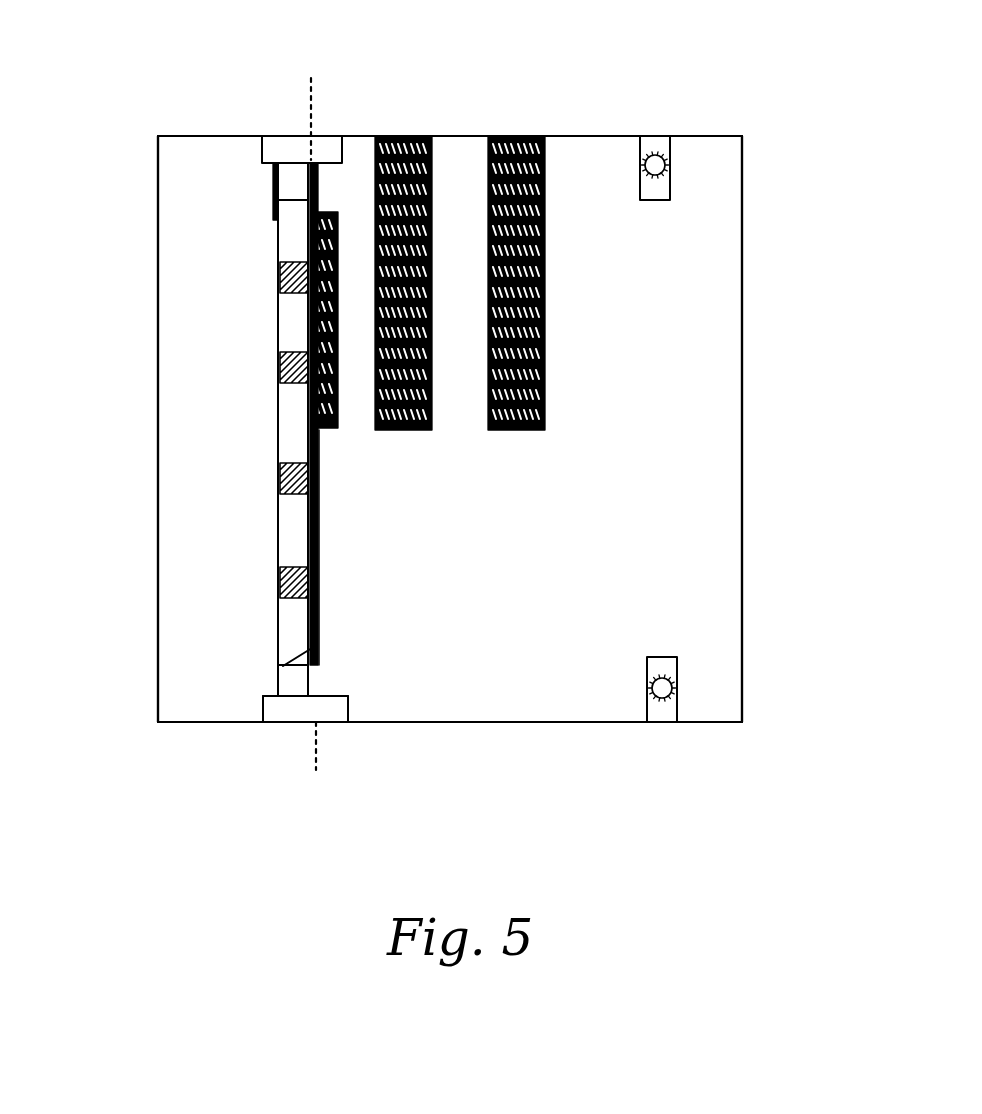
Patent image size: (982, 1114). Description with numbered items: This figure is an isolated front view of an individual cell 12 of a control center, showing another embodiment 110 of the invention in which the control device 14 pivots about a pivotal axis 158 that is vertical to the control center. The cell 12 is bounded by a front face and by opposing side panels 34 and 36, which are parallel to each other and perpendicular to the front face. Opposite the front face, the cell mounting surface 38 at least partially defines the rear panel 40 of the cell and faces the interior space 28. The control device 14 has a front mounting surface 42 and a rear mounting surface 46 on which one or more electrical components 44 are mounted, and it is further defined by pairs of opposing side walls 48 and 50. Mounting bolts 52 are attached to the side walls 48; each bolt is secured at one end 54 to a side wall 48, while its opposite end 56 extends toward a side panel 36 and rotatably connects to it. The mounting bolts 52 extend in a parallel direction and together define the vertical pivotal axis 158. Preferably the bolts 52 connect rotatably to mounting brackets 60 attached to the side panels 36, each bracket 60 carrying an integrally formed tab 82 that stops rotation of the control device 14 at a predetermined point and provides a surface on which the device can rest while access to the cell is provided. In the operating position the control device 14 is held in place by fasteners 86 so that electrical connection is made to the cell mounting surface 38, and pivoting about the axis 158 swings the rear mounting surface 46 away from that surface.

The cell 12 is at (185, 604).
The control device 14 is at (287, 408).
The interior space 28 is at (550, 625).
The side panel 34 is at (157, 453).
The side panel 36 is at (612, 135).
The cell mounting surface 38 is at (527, 135).
The rear panel 40 is at (572, 167).
The front mounting surface 42 is at (308, 517).
The electrical component 44 is at (417, 134).
The rear mounting surface 46 is at (318, 460).
The side wall 48 is at (290, 200).
The side wall 50 is at (312, 652).
The mounting bolt 52 is at (317, 678).
The end of mounting bolt 54 is at (313, 165).
The opposite end of mounting bolt 56 is at (320, 173).
The mounting bracket 60 is at (280, 147).
The tab 82 is at (278, 678).
The fastener 86 is at (655, 165).
The embodiment 110 is at (837, 165).
The pivotal axis 158 is at (303, 84).